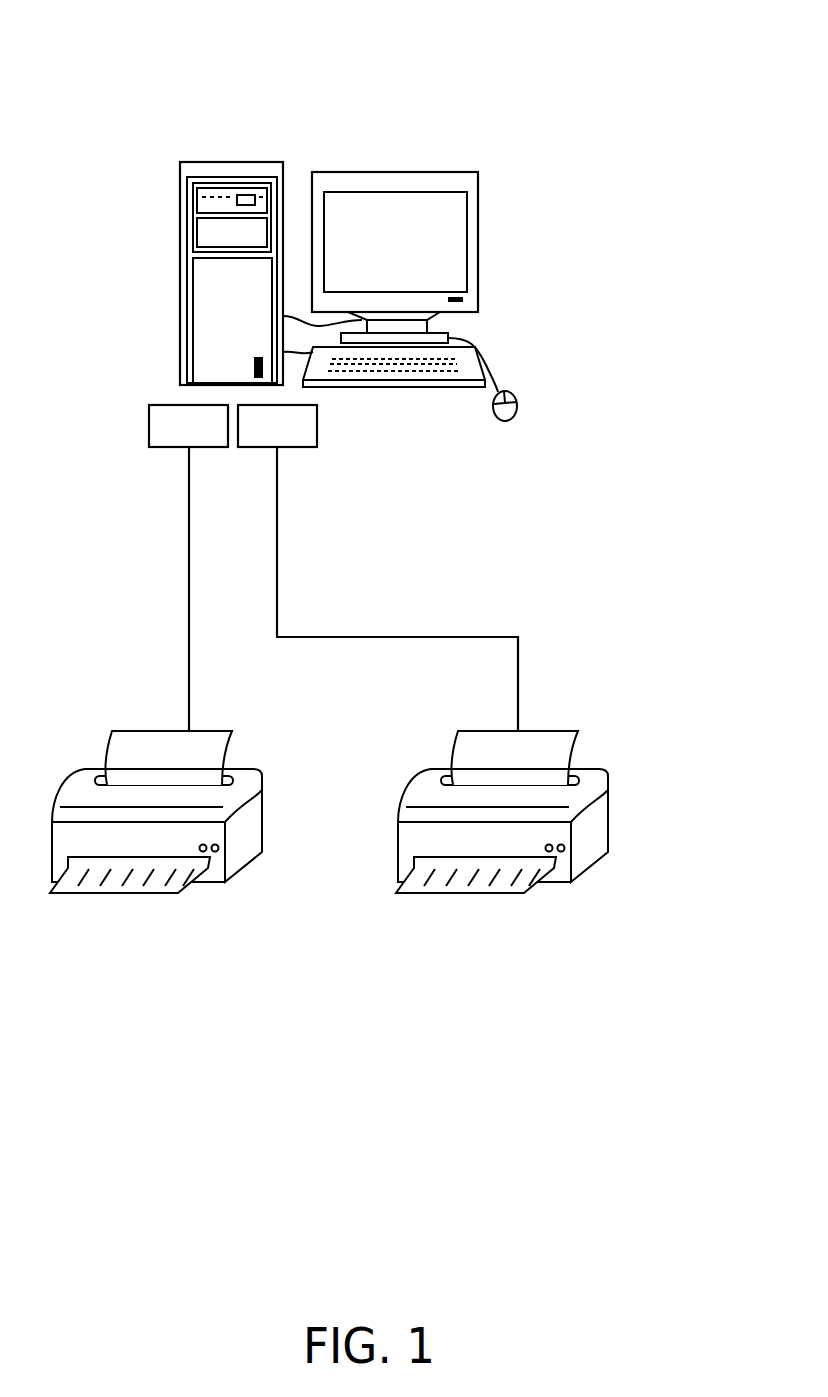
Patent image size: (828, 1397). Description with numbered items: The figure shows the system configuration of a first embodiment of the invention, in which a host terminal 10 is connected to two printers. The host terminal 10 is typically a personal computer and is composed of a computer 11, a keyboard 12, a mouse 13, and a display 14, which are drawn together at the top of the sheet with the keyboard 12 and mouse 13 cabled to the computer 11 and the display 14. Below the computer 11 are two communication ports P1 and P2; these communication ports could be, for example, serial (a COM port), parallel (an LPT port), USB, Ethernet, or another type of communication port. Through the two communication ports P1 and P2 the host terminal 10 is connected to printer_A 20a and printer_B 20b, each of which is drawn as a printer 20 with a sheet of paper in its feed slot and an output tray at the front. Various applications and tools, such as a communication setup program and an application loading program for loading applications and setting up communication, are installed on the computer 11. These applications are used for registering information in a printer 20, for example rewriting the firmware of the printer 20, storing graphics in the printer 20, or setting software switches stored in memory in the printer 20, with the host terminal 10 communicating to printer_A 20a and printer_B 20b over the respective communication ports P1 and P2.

The host terminal 10 is at (440, 101).
The computer 11 is at (180, 222).
The keyboard 12 is at (397, 378).
The mouse 13 is at (518, 405).
The display 14 is at (452, 211).
The communication port P1 is at (205, 448).
The communication port P2 is at (293, 448).
The printer 20 is at (603, 678).
The printer_A 20a is at (247, 827).
The printer_B 20b is at (593, 827).